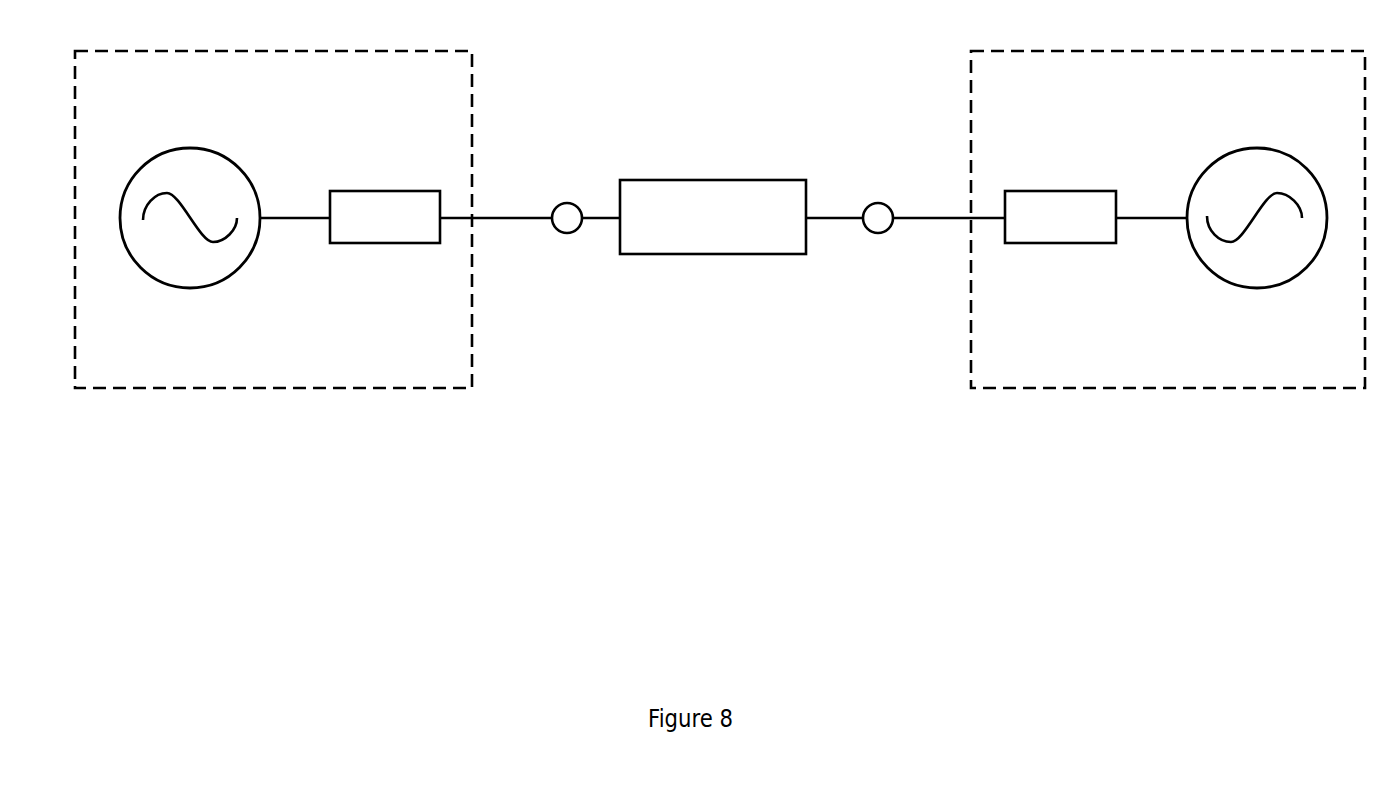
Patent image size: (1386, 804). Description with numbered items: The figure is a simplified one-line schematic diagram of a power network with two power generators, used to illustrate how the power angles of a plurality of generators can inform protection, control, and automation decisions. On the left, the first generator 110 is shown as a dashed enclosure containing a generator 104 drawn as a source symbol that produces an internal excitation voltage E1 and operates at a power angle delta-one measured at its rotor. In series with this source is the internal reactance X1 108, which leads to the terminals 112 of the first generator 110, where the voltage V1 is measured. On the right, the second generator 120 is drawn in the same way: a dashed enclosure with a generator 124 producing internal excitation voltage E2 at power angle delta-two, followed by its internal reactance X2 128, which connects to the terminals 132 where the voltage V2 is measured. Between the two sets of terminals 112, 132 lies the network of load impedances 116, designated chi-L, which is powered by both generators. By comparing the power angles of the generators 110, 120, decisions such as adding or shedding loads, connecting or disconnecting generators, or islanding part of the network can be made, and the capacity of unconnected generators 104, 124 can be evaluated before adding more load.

The generator 104 is at (195, 148).
The internal reactance X1 108 is at (365, 190).
The first generator 110 is at (262, 388).
The terminals 112 is at (567, 203).
The network of load impedances 116 is at (688, 180).
The second generator 120 is at (1180, 388).
The generator 124 is at (1233, 148).
The internal reactance X2 128 is at (1046, 190).
The terminals 132 is at (878, 203).